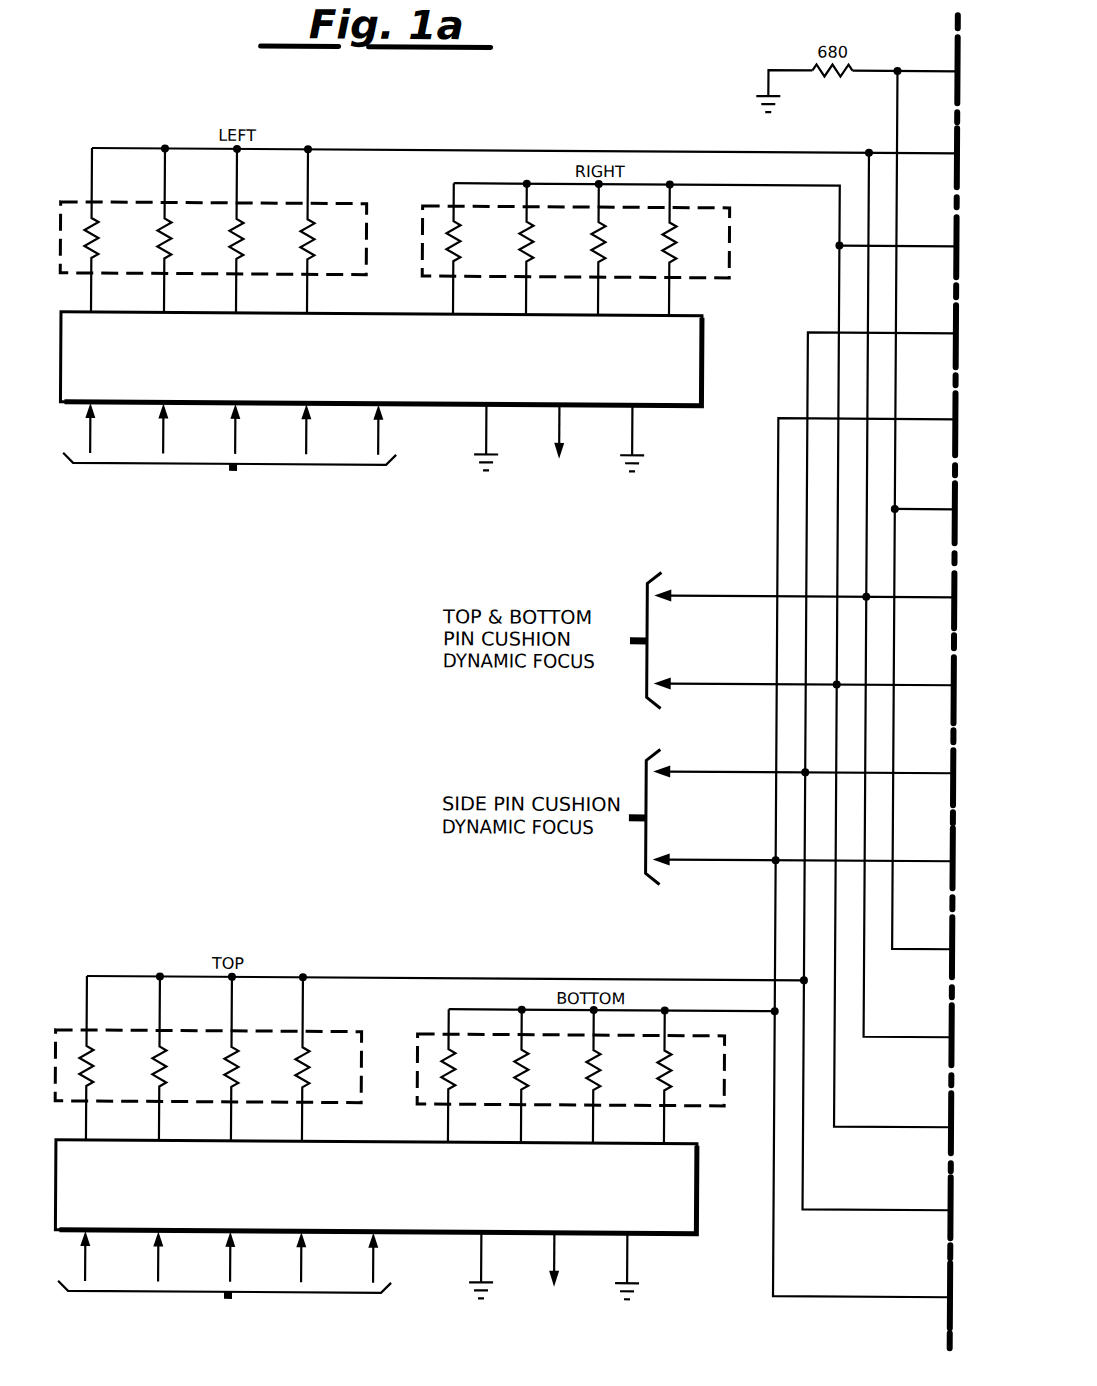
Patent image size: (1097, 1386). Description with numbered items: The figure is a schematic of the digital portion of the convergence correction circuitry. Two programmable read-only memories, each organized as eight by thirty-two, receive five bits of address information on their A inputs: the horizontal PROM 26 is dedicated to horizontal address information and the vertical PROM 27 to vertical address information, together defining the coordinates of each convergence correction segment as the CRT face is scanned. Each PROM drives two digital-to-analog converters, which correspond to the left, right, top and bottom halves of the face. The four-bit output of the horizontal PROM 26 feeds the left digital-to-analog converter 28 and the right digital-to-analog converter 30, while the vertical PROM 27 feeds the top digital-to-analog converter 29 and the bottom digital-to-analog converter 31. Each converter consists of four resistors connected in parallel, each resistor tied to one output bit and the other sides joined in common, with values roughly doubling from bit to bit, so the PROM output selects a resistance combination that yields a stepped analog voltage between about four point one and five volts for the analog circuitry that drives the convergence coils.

The horizontal PROM 26 is at (680, 404).
The vertical PROM 27 is at (675, 1231).
The left digital-to-analog converter 28 is at (80, 201).
The top digital-to-analog converter 29 is at (71, 1031).
The right digital-to-analog converter 30 is at (437, 204).
The bottom digital-to-analog converter 31 is at (430, 1032).